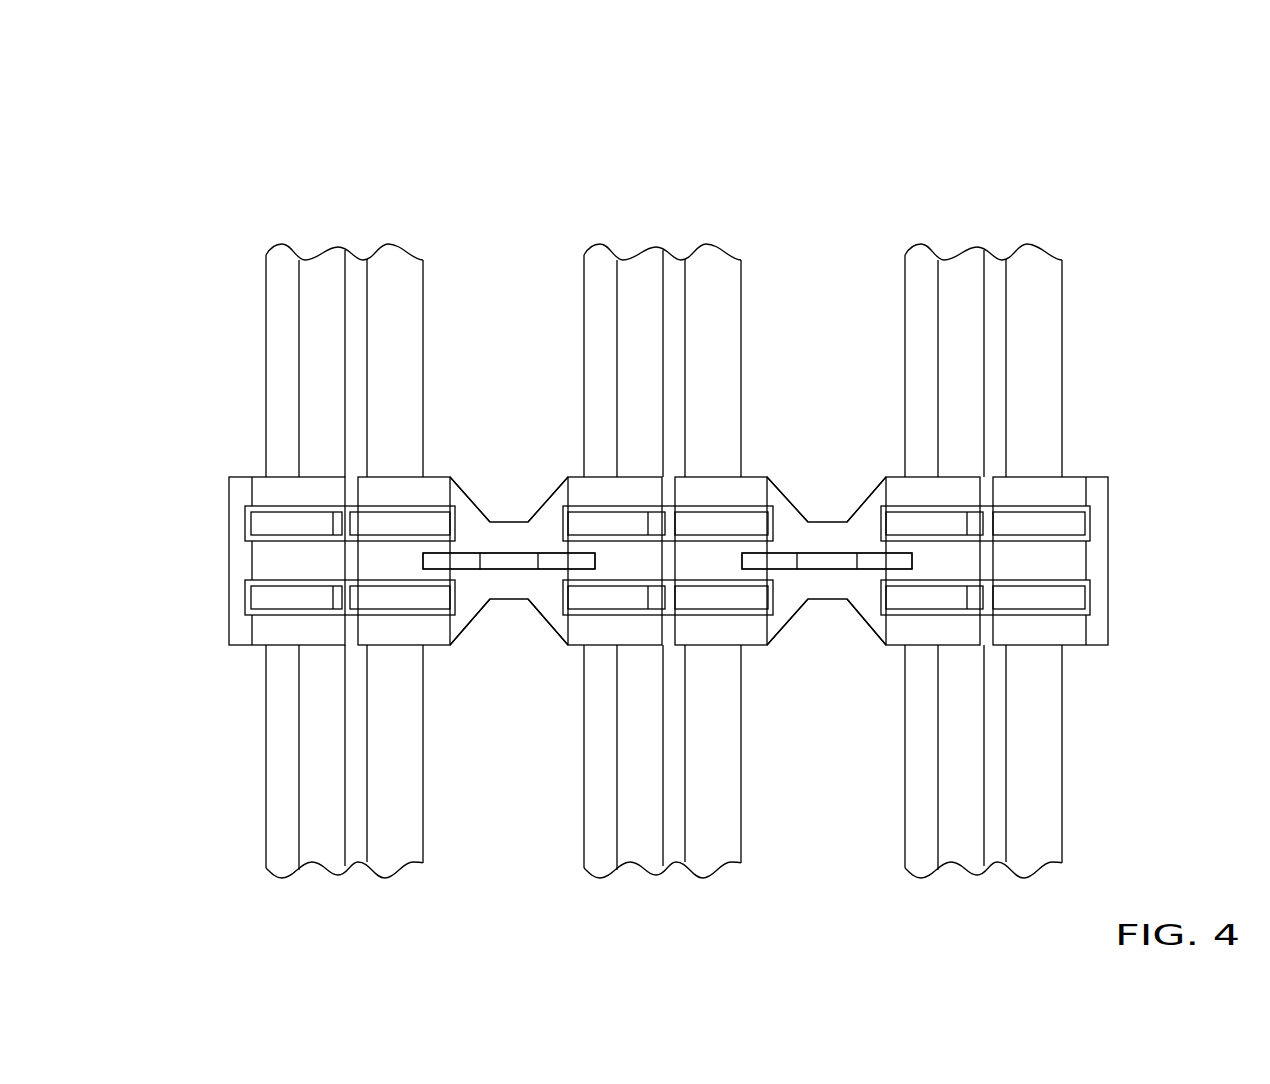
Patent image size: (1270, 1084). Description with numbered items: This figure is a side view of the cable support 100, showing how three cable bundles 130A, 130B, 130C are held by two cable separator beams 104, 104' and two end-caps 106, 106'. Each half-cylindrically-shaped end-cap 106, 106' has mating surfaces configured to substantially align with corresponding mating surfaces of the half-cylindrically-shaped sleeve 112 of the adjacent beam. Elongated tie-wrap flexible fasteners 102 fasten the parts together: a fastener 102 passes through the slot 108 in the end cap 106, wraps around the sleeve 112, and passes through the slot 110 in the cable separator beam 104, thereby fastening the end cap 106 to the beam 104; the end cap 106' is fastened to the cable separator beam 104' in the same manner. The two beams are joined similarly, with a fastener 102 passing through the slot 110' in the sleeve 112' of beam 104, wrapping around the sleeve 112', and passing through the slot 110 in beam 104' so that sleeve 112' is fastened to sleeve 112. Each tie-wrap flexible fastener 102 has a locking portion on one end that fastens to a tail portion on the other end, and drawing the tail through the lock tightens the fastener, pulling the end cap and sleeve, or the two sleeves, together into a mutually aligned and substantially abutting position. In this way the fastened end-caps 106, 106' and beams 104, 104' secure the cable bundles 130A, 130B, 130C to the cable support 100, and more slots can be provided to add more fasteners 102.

The cable support 100 is at (742, 196).
The elongated tie-wrap flexible fastener 102 is at (1073, 778).
The cable separator beam 104 is at (827, 382).
The cable separator beam 104' is at (509, 402).
The end-cap 106 is at (1126, 561).
The end-cap 106' is at (208, 561).
The slot 108 is at (1185, 603).
The slot 110 is at (705, 550).
The slot 110' is at (635, 536).
The sleeve 112 is at (805, 533).
The sleeve 112' is at (631, 593).
The cable bundle 130A is at (333, 807).
The cable bundle 130B is at (647, 807).
The cable bundle 130C is at (966, 807).